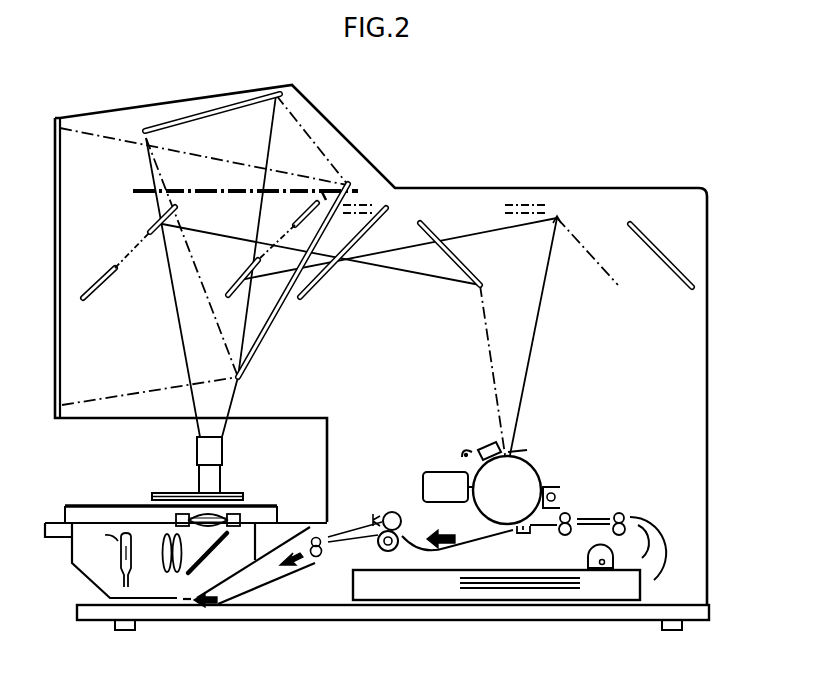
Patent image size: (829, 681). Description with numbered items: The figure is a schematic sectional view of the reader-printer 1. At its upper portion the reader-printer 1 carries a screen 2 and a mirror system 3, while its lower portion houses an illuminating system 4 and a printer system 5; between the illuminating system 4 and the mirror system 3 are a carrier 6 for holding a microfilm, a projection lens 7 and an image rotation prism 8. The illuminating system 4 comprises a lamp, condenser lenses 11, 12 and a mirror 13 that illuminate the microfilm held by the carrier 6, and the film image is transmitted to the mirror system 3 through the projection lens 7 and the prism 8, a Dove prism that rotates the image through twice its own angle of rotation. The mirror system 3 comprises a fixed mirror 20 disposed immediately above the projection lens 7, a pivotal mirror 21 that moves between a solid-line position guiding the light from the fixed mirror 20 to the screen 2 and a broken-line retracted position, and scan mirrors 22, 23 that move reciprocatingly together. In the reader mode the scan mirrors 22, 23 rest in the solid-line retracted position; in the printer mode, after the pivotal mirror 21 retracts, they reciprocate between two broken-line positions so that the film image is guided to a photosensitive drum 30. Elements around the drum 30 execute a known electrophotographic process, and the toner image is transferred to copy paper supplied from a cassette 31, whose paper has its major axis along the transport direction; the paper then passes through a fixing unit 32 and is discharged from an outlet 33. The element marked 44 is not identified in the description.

The reader-printer 1 is at (566, 156).
The screen 2 is at (57, 252).
The mirror system 3 is at (368, 329).
The illuminating system 4 is at (95, 553).
The printer system 5 is at (612, 467).
The carrier 6 is at (170, 493).
The projection lens 7 is at (217, 472).
The image rotation prism 8 is at (217, 443).
The condenser lens 11 is at (163, 556).
The condenser lens 12 is at (227, 524).
The mirror 13 is at (205, 553).
The fixed mirror 20 is at (212, 110).
The pivotal mirror 21 is at (350, 192).
The scan mirror 22 is at (385, 206).
The scan mirror 23 is at (632, 225).
The photosensitive drum 30 is at (517, 477).
The cassette 31 is at (500, 601).
The fixing unit 32 is at (385, 512).
The outlet 33 is at (113, 604).
The tray tab 44 is at (50, 531).